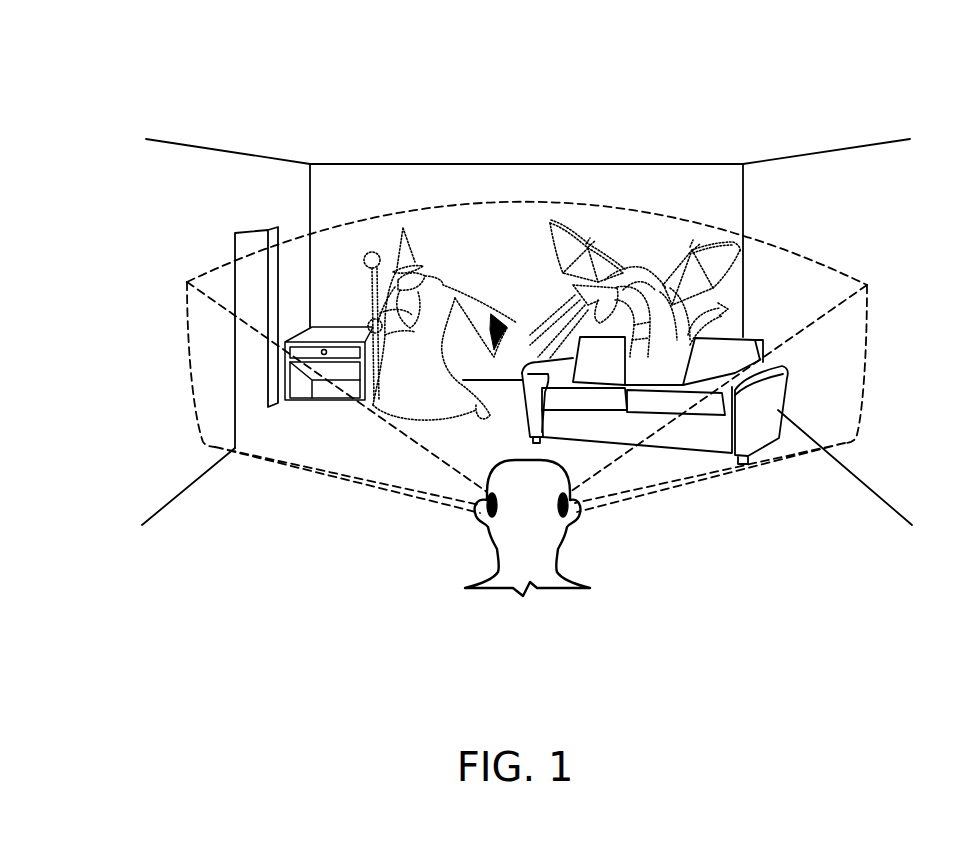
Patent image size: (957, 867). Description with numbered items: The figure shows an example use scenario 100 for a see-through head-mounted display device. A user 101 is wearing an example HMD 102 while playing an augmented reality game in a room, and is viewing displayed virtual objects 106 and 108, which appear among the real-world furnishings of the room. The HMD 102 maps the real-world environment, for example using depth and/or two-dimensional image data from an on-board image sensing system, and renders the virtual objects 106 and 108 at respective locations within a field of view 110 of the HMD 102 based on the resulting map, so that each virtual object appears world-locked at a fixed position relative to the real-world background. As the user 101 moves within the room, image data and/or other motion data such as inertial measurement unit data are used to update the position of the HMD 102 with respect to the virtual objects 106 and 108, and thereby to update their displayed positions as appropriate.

The use scenario 100 is at (768, 120).
The user 101 is at (513, 513).
The HMD 102 is at (488, 534).
The virtual object 106 is at (448, 284).
The virtual object 108 is at (728, 265).
The field of view 110 is at (633, 208).